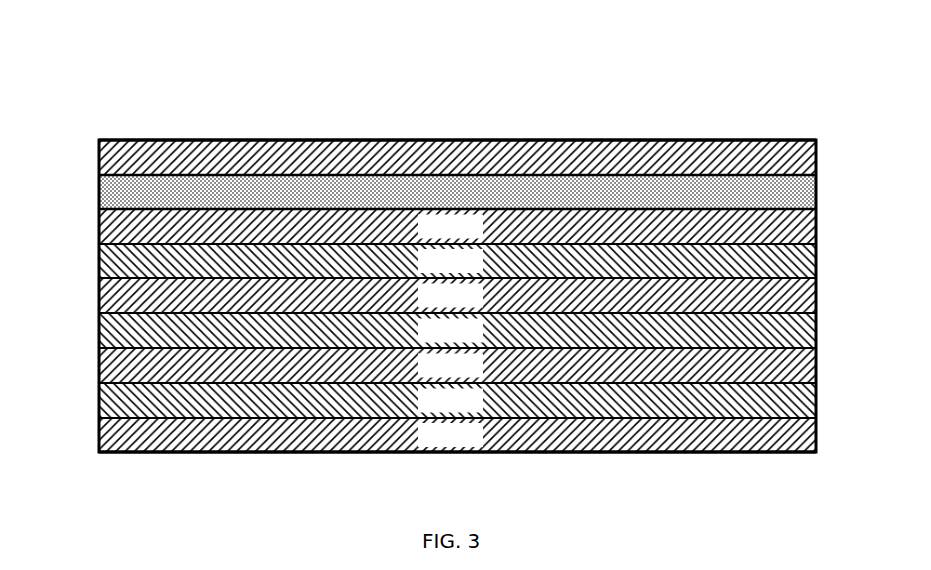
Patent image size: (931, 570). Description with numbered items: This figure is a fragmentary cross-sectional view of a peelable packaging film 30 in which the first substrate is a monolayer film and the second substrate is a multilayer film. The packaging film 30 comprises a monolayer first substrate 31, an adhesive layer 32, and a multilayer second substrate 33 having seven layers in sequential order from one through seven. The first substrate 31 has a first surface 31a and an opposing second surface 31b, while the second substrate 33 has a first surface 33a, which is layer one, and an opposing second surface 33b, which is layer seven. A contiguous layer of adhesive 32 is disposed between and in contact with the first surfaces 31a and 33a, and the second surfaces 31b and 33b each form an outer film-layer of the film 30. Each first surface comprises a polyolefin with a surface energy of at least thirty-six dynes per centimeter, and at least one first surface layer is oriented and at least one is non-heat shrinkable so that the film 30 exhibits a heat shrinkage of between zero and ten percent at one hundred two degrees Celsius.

The packaging film 30 is at (450, 277).
The monolayer first substrate 31 is at (423, 156).
The first surface of first substrate 31a is at (180, 190).
The second surface of first substrate 31b is at (292, 124).
The adhesive layer 32 is at (818, 192).
The multilayer second substrate 33 is at (420, 370).
The first surface of second substrate 33a is at (224, 225).
The second surface of second substrate 33b is at (151, 470).